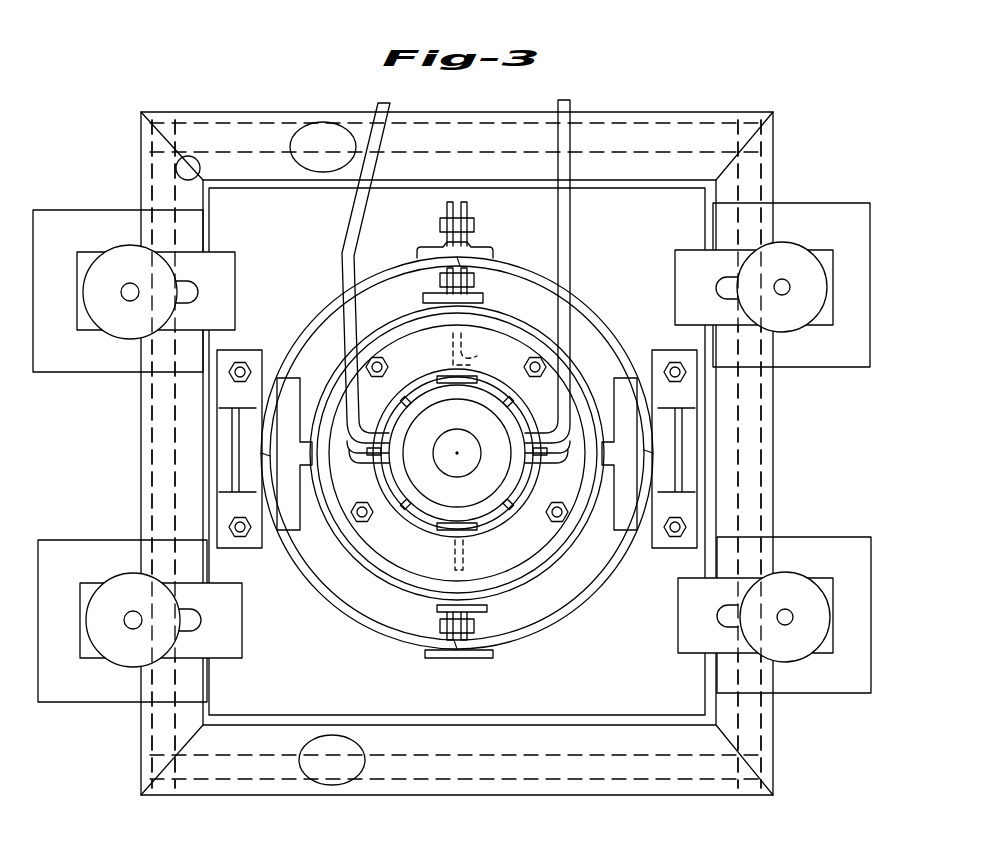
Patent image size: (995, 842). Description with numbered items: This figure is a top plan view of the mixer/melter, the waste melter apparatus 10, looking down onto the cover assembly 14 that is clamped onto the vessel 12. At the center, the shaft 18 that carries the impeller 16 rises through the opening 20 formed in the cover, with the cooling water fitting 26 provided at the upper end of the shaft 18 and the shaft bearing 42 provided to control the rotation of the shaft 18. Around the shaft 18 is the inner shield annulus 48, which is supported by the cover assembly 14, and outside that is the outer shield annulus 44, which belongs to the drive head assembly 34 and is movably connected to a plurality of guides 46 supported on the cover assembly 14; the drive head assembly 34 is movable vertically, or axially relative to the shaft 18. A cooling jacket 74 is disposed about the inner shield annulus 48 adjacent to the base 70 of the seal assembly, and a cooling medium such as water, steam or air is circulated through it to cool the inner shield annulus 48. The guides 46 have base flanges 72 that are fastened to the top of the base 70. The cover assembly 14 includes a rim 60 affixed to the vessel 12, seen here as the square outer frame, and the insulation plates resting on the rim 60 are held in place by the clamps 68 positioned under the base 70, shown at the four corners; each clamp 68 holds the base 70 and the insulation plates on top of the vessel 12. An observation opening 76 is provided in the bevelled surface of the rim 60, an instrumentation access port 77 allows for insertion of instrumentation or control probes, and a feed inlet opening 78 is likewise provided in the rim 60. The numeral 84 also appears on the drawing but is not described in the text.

The waste melter apparatus 10 is at (757, 106).
The vessel 12 is at (752, 165).
The cover assembly 14 is at (604, 178).
The impeller 16 is at (474, 445).
The shaft 18 is at (466, 466).
The opening 20 is at (491, 463).
The cooling water fitting 26 is at (423, 432).
The drive head assembly 34 is at (602, 536).
The shaft bearing 42 is at (440, 540).
The outer shield annulus 44 is at (547, 636).
The guides 46 is at (680, 441).
The inner shield annulus 48 is at (416, 392).
The rim 60 is at (638, 737).
The clamp 68 is at (795, 258).
The base 70 is at (242, 200).
The base flanges 72 is at (668, 360).
The cooling jacket 74 is at (398, 505).
The observation opening 76 is at (335, 131).
The instrumentation access port 77 is at (181, 170).
The feed inlet opening 78 is at (350, 770).
The opening 84 is at (532, 837).